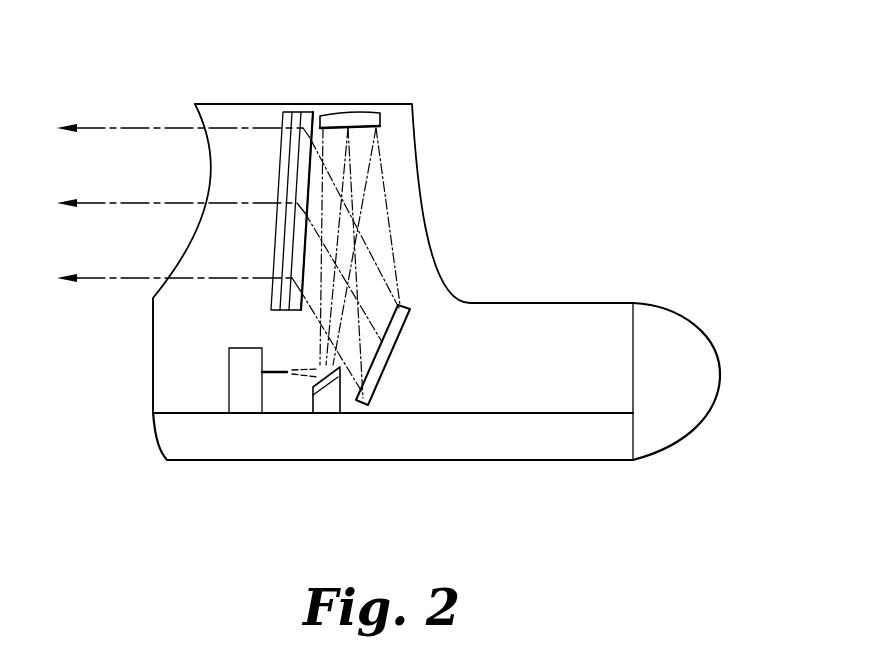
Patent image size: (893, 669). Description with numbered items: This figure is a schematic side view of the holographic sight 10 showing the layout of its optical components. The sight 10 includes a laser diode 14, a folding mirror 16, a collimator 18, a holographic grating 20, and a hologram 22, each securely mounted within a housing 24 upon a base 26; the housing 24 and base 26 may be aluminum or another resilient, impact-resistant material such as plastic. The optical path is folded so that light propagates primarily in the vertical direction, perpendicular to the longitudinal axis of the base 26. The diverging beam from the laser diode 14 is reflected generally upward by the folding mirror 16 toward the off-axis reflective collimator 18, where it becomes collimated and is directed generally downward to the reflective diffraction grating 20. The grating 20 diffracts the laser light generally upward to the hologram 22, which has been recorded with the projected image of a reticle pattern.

The holographic sight 10 is at (507, 273).
The laser diode 14 is at (222, 395).
The folding mirror 16 is at (321, 385).
The collimator 18 is at (364, 113).
The holographic grating 20 is at (408, 340).
The hologram 22 is at (300, 113).
The housing 24 is at (170, 348).
The base 26 is at (280, 437).